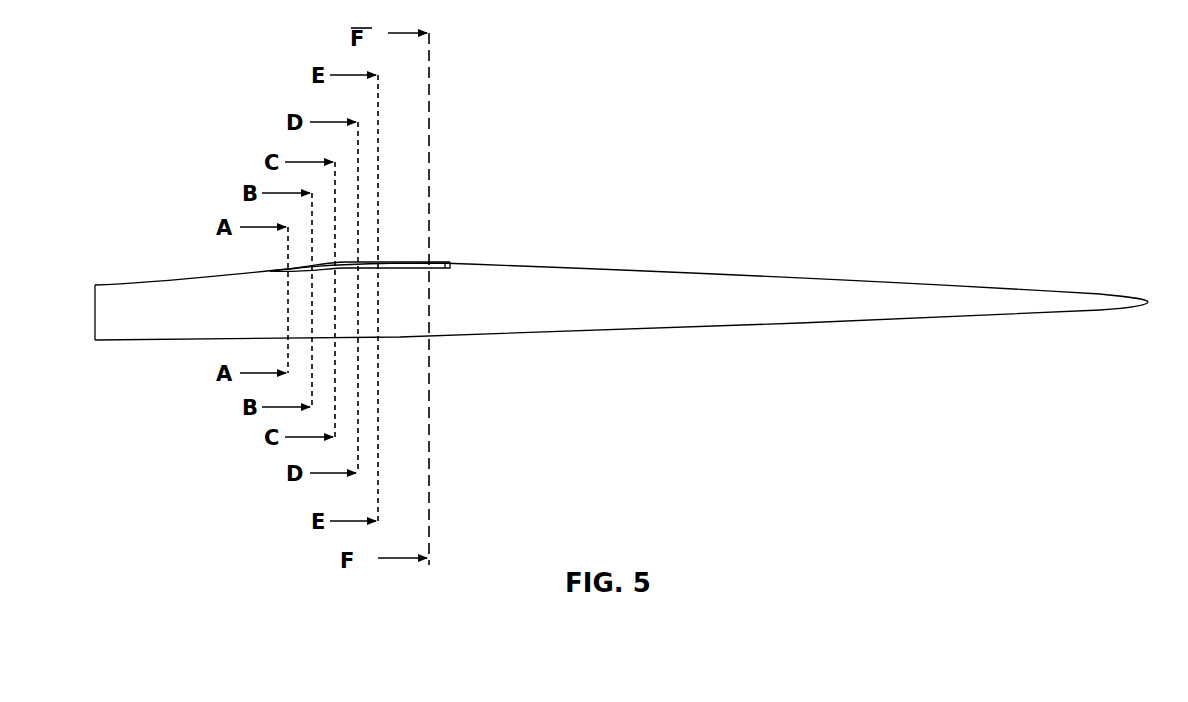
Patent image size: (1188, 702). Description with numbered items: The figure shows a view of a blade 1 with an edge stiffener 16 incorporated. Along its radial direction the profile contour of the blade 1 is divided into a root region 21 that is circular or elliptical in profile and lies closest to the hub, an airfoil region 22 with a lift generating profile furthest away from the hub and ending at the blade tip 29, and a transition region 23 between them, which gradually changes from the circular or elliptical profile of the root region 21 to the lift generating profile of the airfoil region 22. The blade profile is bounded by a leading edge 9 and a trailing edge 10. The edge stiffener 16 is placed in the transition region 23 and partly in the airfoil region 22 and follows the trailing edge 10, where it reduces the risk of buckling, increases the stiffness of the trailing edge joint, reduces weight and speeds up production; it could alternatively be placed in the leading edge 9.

The blade 1 is at (619, 230).
The leading edge 9 is at (637, 327).
The trailing edge 10 is at (513, 262).
The edge stiffener 16 is at (370, 263).
The root region 21 is at (122, 295).
The airfoil region 22 is at (412, 292).
The transition region 23 is at (283, 295).
The blade tip 29 is at (1113, 300).